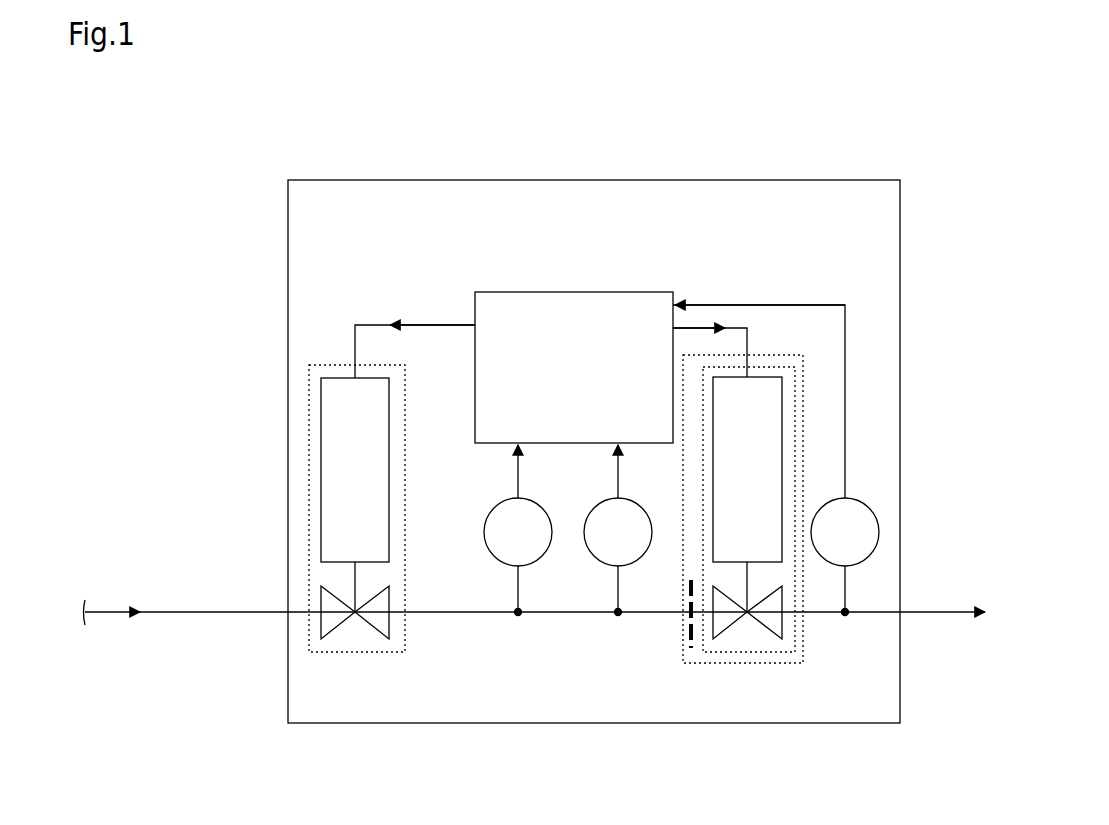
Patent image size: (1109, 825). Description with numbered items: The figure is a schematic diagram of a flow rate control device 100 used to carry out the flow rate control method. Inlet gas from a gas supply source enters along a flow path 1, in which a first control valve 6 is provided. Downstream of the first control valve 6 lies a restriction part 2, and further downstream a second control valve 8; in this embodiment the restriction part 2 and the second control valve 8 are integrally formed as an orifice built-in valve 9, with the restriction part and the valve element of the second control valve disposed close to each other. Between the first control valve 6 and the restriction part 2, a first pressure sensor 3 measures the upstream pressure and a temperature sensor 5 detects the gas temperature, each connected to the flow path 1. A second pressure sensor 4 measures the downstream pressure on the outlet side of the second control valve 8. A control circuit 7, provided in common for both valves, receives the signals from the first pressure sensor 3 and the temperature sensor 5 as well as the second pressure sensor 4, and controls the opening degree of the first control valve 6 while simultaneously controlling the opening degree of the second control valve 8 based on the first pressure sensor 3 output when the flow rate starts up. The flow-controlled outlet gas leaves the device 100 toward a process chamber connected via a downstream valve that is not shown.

The flow rate control device 100 is at (743, 180).
The flow path 1 is at (253, 612).
The restriction part 2 is at (687, 645).
The first pressure sensor 3 is at (597, 558).
The second pressure sensor 4 is at (858, 562).
The temperature sensor 5 is at (493, 558).
The first control valve 6 is at (362, 652).
The control circuit 7 is at (565, 292).
The second control valve 8 is at (743, 652).
The orifice built-in valve 9 is at (795, 663).